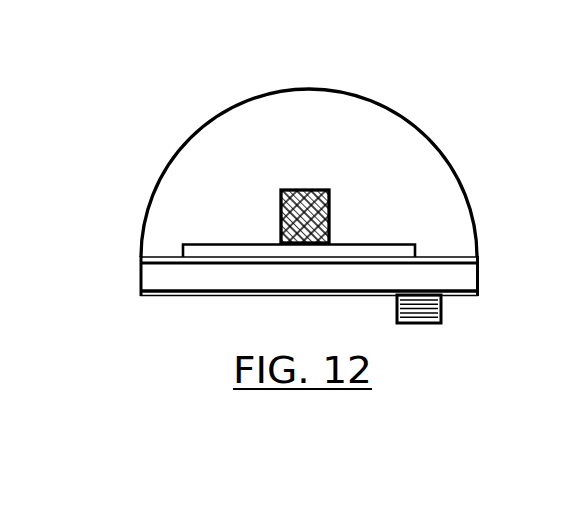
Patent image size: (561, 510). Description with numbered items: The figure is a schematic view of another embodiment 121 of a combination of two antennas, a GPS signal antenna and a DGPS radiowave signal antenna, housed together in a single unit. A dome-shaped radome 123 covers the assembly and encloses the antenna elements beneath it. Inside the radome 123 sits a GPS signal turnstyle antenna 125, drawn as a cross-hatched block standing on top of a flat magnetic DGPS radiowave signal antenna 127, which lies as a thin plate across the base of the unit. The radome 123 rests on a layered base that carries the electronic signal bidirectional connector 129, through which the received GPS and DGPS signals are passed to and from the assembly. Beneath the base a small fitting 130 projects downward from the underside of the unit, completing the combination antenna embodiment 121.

The combination antenna embodiment 121 is at (410, 70).
The radome 123 is at (425, 132).
The GPS signal turnstyle antenna 125 is at (330, 207).
The magnetic DGPS radiowave signal antenna 127 is at (355, 252).
The electronic signal bidirectional connector 129 is at (140, 259).
The connector 130 is at (442, 308).